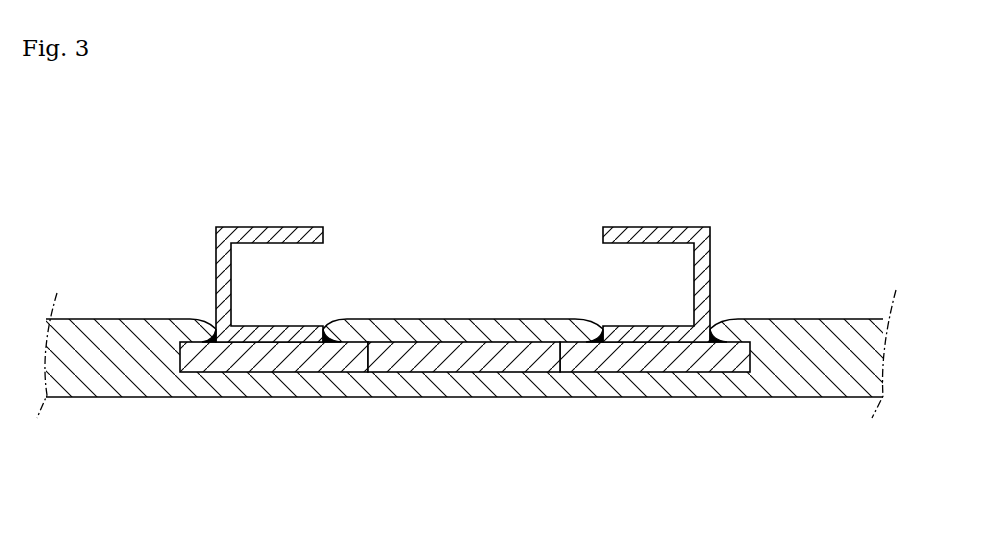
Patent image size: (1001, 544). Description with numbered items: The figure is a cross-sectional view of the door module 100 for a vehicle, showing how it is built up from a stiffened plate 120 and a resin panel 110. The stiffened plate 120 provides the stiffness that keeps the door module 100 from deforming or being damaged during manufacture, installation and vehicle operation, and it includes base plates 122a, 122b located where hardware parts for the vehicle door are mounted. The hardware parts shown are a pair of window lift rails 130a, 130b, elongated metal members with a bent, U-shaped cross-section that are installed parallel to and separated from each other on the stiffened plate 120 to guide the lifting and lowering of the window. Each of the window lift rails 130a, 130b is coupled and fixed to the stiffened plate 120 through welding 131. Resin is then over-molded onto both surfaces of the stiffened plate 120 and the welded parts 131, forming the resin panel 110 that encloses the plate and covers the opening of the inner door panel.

The door module 100 is at (466, 292).
The resin panel 110 is at (167, 388).
The stiffened plate 120 is at (477, 358).
The base plate 122a is at (290, 362).
The base plate 122b is at (660, 358).
The window lift rail 130a is at (283, 236).
The window lift rail 130b is at (654, 236).
The welding 131 is at (204, 334).